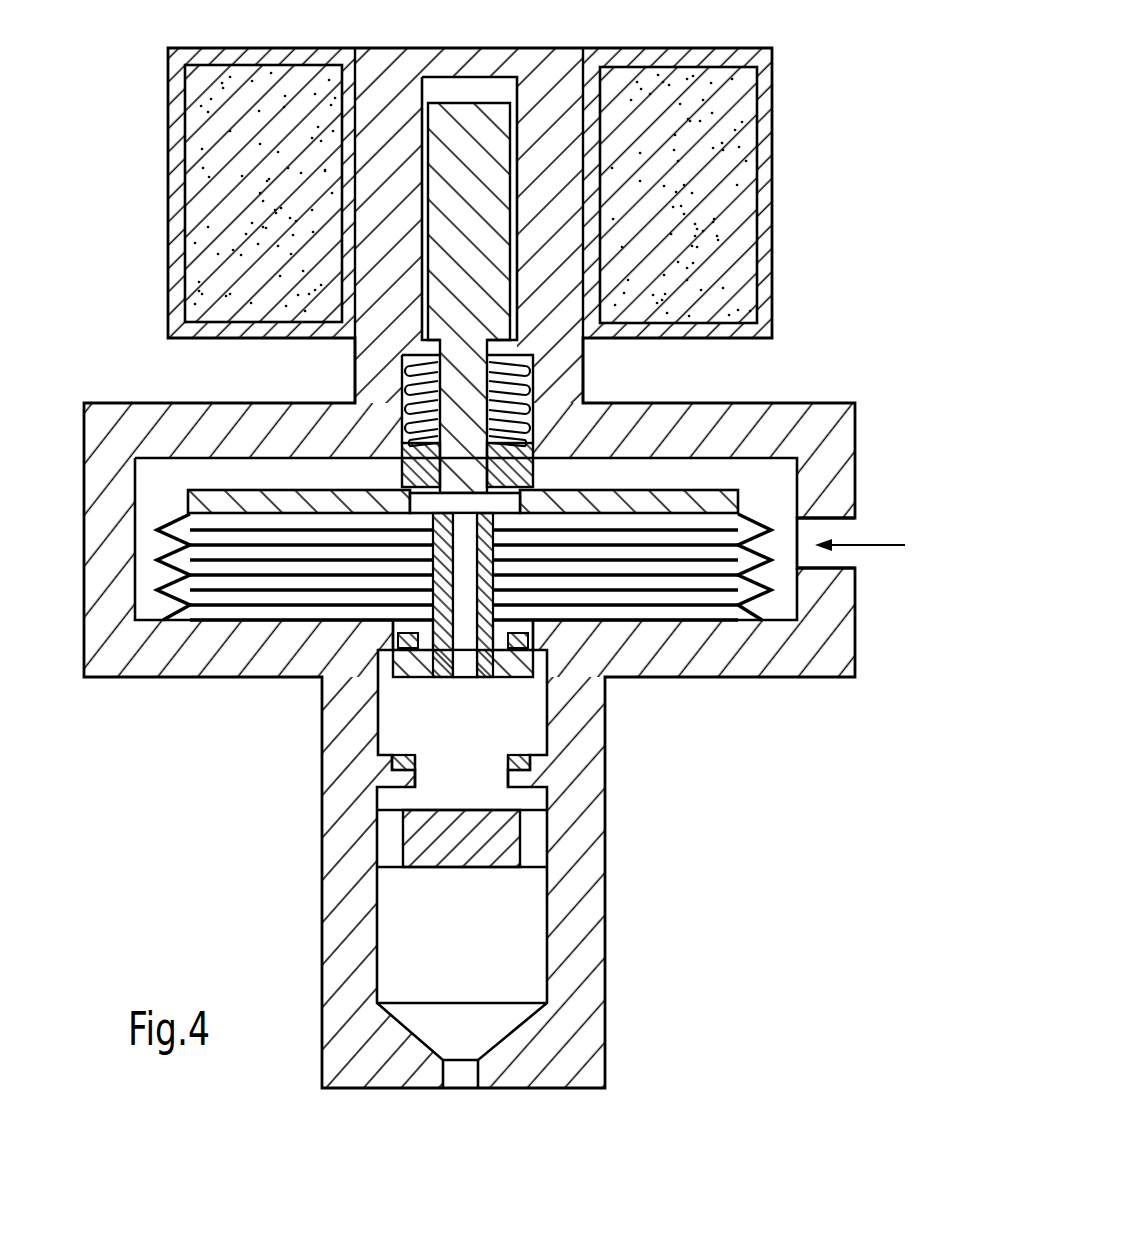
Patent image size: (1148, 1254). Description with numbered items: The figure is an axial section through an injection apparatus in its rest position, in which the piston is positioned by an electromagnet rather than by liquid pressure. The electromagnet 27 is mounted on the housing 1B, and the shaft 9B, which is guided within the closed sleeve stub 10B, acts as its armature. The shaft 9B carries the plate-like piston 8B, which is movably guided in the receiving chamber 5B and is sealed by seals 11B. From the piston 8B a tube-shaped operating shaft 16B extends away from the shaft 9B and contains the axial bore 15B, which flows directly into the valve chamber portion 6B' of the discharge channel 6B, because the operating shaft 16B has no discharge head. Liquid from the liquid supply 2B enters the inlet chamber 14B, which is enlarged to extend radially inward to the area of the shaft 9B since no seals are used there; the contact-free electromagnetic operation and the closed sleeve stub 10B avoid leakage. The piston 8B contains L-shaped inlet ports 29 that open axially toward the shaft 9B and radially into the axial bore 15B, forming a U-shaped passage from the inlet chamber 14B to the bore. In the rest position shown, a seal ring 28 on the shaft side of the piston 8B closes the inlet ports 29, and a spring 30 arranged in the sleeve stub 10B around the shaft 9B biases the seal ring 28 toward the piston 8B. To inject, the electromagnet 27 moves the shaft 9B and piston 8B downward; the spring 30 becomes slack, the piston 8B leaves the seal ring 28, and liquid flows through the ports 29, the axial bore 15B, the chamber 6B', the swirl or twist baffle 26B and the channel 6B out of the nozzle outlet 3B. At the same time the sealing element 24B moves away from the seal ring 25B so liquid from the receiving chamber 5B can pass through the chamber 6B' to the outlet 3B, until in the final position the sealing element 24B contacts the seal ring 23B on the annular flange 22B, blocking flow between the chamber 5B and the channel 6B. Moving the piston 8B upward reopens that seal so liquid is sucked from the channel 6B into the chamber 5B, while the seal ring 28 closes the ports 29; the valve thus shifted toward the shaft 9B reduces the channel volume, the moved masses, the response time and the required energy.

The housing 1B is at (798, 397).
The liquid supply 2B is at (853, 527).
The nozzle outlet 3B is at (462, 1073).
The receiving chamber 5B is at (697, 598).
The discharge channel 6B is at (511, 935).
The valve chamber portion 6B' is at (390, 725).
The piston 8B is at (738, 494).
The shaft 9B is at (492, 207).
The sleeve stub 10B is at (540, 66).
The seals 11B is at (165, 518).
The inlet chamber 14B is at (797, 470).
The axial bore 15B is at (467, 577).
The operating shaft 16B is at (440, 566).
The annular flange 22B is at (517, 778).
The seal ring 23B is at (410, 765).
The sealing element 24B is at (527, 658).
The seal ring 25B is at (393, 645).
The swirl or twist baffle 26B is at (507, 843).
The electromagnet 27 is at (757, 240).
The seal ring 28 is at (528, 478).
The inlet ports 29 is at (412, 497).
The spring 30 is at (512, 392).